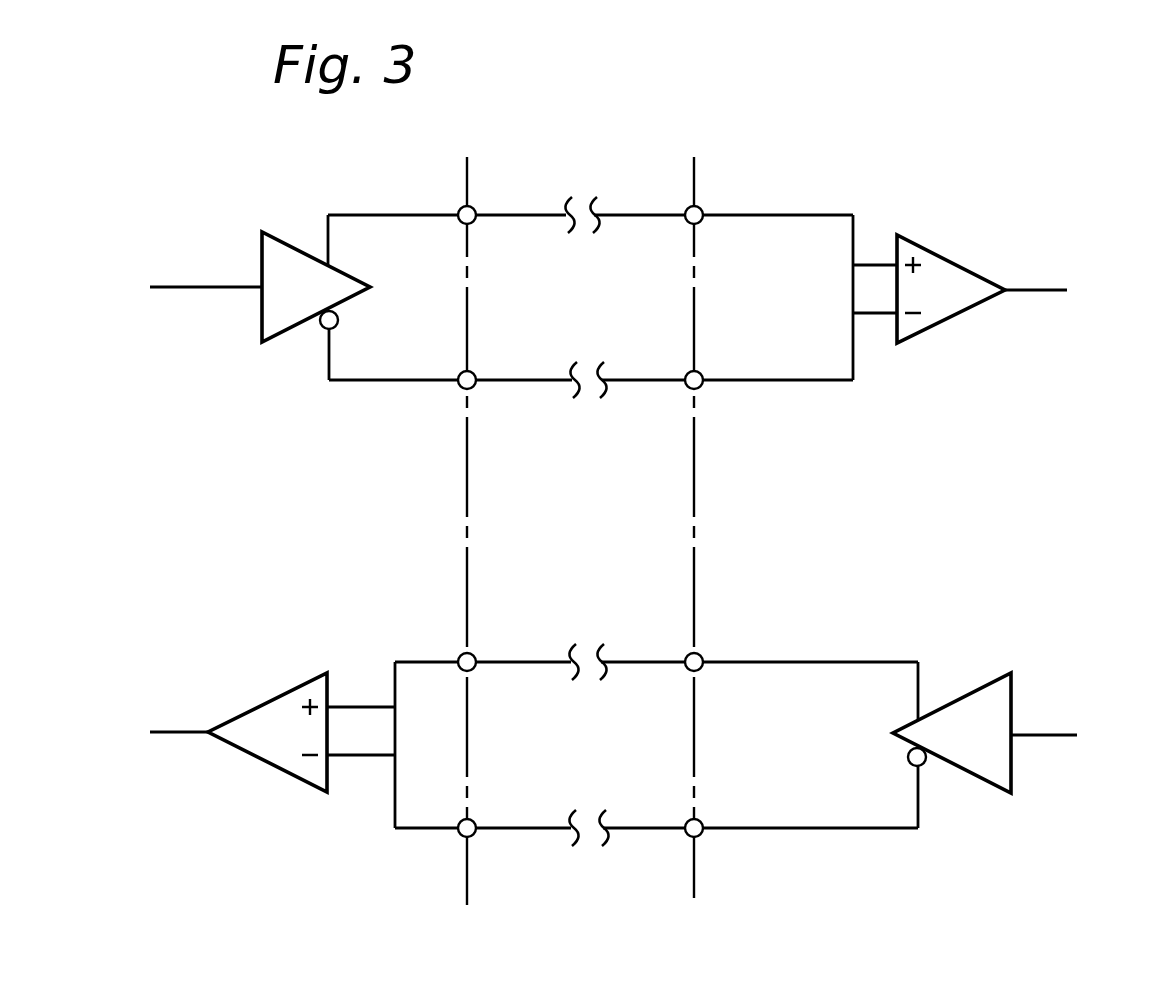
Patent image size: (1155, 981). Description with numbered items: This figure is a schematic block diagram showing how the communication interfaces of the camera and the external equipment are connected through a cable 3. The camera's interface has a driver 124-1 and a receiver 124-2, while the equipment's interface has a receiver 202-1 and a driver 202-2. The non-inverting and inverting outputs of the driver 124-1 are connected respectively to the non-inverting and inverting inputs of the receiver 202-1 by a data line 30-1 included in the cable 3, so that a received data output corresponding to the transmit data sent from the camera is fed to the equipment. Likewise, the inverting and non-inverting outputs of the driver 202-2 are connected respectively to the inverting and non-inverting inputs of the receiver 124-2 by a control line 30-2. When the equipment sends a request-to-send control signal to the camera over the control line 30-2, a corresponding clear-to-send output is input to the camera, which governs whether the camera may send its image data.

The cable 3 is at (578, 176).
The data line 30-1 is at (632, 215).
The control line 30-2 is at (647, 663).
The driver 124-1 is at (272, 236).
The receiver 124-2 is at (253, 708).
The receiver 202-1 is at (922, 246).
The driver 202-2 is at (978, 692).